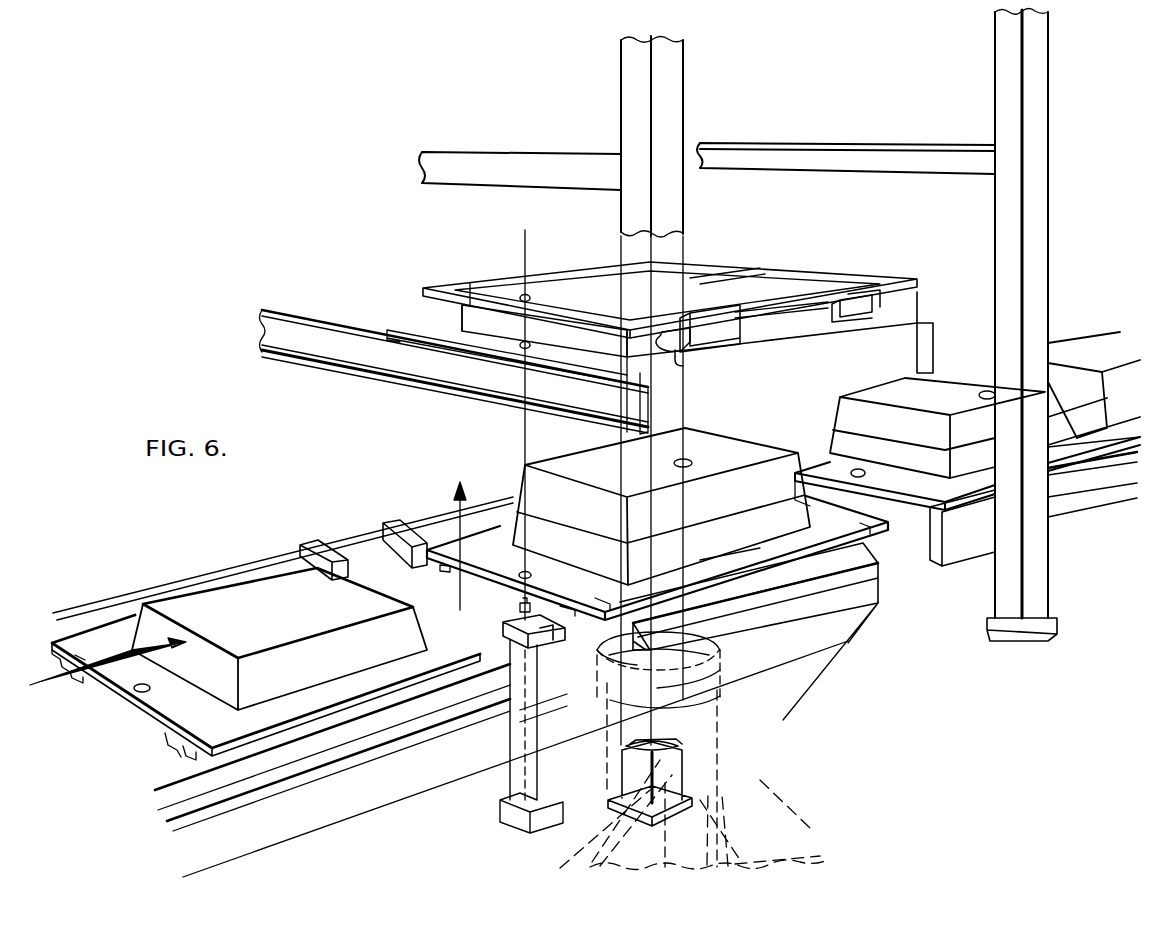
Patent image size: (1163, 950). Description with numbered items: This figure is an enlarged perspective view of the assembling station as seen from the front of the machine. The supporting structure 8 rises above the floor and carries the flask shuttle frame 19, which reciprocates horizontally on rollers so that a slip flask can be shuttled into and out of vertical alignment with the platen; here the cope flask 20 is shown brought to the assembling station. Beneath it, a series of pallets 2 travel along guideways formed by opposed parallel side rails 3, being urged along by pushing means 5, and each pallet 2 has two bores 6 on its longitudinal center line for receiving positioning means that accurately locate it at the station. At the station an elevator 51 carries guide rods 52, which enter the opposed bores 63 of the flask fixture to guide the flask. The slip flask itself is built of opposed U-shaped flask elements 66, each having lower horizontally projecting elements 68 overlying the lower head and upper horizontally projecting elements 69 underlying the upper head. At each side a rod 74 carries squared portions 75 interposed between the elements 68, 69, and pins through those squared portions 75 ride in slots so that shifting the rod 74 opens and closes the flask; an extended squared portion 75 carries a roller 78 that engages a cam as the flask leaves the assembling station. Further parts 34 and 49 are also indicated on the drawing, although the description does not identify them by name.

The pallet 2 is at (490, 538).
The side rail 3 is at (317, 745).
The pushing means 5 is at (379, 525).
The bore 6 is at (530, 576).
The supporting structure 8 is at (680, 90).
The flask shuttle frame 19 is at (402, 359).
The cope flask 20 is at (464, 312).
The frame 34 is at (574, 344).
The rod 49 is at (524, 344).
The elevator 51 is at (808, 625).
The guide rod 52 is at (532, 636).
The bore 63 is at (527, 347).
The flask element 66 is at (601, 286).
The horizontally projecting element 68 is at (888, 310).
The horizontally projecting element 69 is at (905, 283).
The rod 74 is at (783, 327).
The squared portion 75 is at (722, 336).
The roller 78 is at (682, 376).